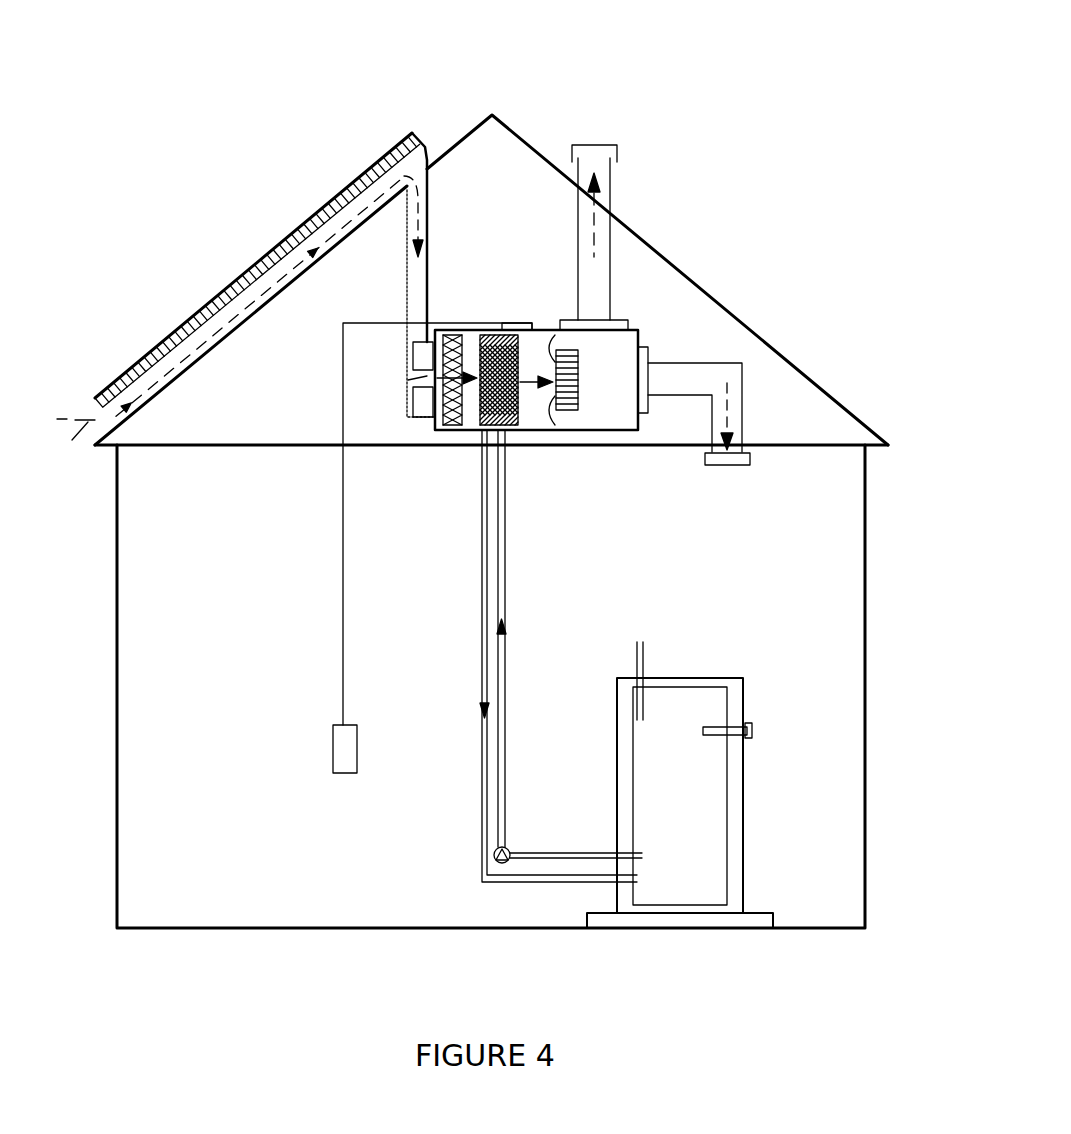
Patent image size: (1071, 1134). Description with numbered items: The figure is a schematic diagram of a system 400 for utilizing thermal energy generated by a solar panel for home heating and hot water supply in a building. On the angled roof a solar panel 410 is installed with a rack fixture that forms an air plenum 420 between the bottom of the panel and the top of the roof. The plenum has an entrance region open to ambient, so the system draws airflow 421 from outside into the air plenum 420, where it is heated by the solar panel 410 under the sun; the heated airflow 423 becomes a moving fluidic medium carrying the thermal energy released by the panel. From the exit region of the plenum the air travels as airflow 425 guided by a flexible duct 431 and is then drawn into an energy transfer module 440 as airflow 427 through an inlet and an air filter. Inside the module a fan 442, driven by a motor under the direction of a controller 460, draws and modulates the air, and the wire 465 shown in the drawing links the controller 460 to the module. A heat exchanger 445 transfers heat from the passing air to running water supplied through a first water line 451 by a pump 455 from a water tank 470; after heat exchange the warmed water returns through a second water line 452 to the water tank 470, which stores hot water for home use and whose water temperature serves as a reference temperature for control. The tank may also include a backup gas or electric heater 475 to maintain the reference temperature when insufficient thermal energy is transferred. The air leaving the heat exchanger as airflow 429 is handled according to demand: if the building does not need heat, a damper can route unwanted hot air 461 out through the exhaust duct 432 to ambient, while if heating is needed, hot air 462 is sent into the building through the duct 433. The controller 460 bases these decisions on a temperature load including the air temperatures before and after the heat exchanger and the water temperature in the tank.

The system 400 is at (589, 64).
The solar panel 410 is at (260, 282).
The air plenum 420 is at (223, 330).
The airflow 421 is at (66, 447).
The airflow 423 is at (273, 287).
The airflow 425 is at (415, 220).
The airflow 427 is at (412, 388).
The airflow 429 is at (523, 385).
The flexible duct 431 is at (428, 246).
The exhaust duct 432 is at (615, 237).
The duct 433 is at (732, 390).
The energy transfer module 440 is at (502, 373).
The fan 442 is at (588, 380).
The heat exchanger 445 is at (480, 413).
The first water line 451 is at (505, 568).
The second water line 452 is at (482, 642).
The pump 455 is at (508, 850).
The controller 460 is at (332, 725).
The hot air 461 is at (596, 203).
The hot air 462 is at (725, 393).
The control line 465 is at (343, 547).
The water tank 470 is at (701, 785).
The backup gas/electric heater 475 is at (750, 722).